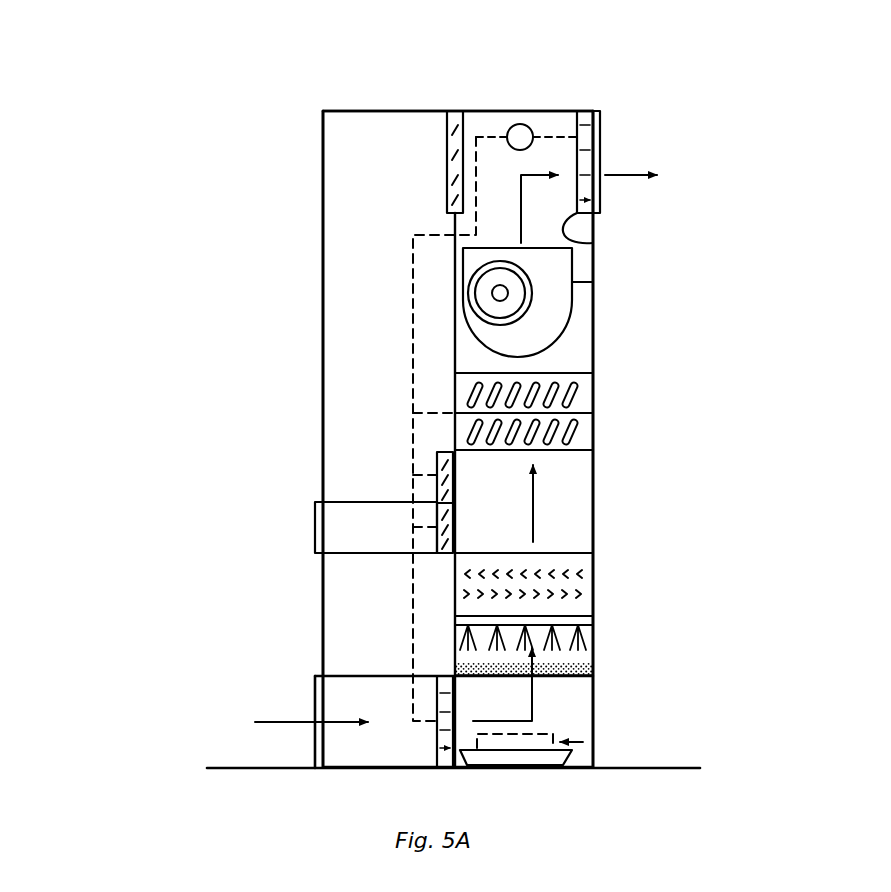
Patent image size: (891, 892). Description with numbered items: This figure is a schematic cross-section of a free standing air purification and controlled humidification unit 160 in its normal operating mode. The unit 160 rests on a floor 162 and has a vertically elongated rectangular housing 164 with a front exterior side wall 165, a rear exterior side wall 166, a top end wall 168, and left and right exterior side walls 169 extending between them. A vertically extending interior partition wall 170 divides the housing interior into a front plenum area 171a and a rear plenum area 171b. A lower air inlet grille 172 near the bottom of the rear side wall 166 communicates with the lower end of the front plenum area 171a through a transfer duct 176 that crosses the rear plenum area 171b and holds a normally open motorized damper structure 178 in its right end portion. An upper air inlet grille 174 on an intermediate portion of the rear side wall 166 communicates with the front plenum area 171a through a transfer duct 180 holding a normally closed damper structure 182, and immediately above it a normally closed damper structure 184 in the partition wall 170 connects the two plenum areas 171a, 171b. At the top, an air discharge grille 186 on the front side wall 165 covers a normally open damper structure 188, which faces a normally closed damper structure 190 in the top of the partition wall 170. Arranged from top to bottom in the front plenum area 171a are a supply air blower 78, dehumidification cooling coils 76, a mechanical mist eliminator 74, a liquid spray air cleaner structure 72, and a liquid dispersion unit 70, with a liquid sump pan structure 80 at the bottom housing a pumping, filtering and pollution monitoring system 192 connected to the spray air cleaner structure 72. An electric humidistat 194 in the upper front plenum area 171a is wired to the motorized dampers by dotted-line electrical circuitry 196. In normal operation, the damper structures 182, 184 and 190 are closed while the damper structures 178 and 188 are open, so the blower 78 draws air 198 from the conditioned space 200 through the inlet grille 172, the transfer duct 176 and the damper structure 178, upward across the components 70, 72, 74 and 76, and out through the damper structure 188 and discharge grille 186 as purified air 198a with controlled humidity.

The conditioned space 200 is at (160, 477).
The housing 164 is at (360, 106).
The rear exterior side wall 166 is at (323, 282).
The front exterior side wall 165 is at (593, 328).
The top end wall 168 is at (505, 111).
The floor 162 is at (222, 768).
The air inlet grille 172 is at (315, 755).
The air purification and controlled humidification unit 160 is at (306, 355).
The left and right exterior side walls 169 is at (391, 300).
The rear plenum area 171b is at (362, 412).
The front plenum area 171a is at (593, 503).
The interior partition wall 170 is at (455, 348).
The air flow control damper structure 190 is at (447, 137).
The air discharge grille 186 is at (600, 135).
The electric humidistat 194 is at (533, 136).
The supply air blower 78 is at (593, 277).
The air flow control damper structure 188 is at (593, 243).
The dehumidification cooling coils 76 is at (593, 428).
The transfer duct 180 is at (352, 502).
The air flow control damper structure 184 is at (453, 478).
The air flow control damper structure 182 is at (453, 544).
The air inlet grille 174 is at (315, 518).
The mechanical mist eliminator 74 is at (593, 598).
The liquid spray air cleaner structure 72 is at (593, 625).
The liquid dispersion unit 70 is at (593, 672).
The transfer duct 176 is at (352, 676).
The air flow control damper structure 178 is at (437, 745).
The liquid sump pan structure 80 is at (540, 766).
The pumping, filtering and pollution monitoring system 192 is at (593, 742).
The electrical circuitry 196 is at (413, 573).
The air 198 is at (593, 473).
The purified air 198a is at (620, 180).